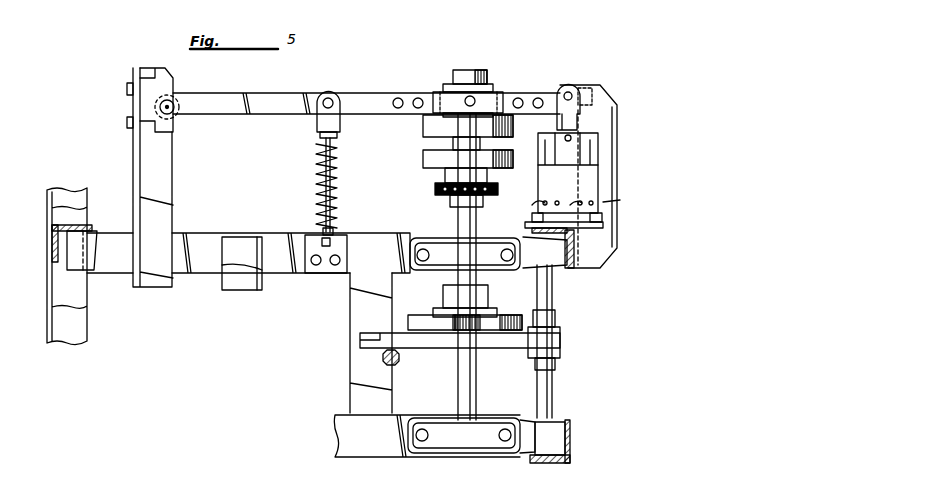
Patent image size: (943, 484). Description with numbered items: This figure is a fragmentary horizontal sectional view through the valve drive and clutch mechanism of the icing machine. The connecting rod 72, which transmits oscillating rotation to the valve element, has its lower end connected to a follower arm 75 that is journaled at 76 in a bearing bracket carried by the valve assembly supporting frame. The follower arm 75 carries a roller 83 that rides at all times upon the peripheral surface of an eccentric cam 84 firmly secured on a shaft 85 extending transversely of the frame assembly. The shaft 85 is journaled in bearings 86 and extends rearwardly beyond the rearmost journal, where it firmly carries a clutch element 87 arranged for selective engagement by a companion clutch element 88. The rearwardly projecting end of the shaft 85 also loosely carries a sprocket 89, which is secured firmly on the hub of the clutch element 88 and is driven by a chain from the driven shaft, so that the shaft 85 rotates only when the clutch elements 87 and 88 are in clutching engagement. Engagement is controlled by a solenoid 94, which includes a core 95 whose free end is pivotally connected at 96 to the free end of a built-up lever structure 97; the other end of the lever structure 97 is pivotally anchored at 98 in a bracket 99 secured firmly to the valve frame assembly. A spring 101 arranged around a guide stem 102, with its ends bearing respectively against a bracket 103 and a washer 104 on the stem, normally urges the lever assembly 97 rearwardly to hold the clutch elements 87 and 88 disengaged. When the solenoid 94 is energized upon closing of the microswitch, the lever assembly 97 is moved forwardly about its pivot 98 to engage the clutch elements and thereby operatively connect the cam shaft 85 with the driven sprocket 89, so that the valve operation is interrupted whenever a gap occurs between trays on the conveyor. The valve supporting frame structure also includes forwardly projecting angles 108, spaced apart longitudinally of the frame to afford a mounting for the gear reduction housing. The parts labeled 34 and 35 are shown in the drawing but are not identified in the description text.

The bearing block 34 is at (80, 226).
The support post 35 is at (45, 325).
The connecting rod 72 is at (398, 360).
The follower arm 75 is at (483, 345).
The journal 76 is at (553, 380).
The roller 83 is at (460, 323).
The eccentric cam 84 is at (506, 315).
The shaft 85 is at (462, 392).
The bearings 86 is at (437, 245).
The clutch element 87 is at (423, 131).
The companion clutch element 88 is at (423, 160).
The sprocket 89 is at (486, 193).
The solenoid 94 is at (572, 175).
The core 95 is at (568, 121).
The pivotal connection 96 is at (568, 92).
The built-up lever structure 97 is at (358, 94).
The pivot 98 is at (170, 104).
The bracket 99 is at (147, 88).
The spring 101 is at (322, 186).
The guide stem 102 is at (338, 216).
The bracket 103 is at (312, 235).
The washer 104 is at (338, 150).
The forwardly projecting angles 108 is at (152, 290).